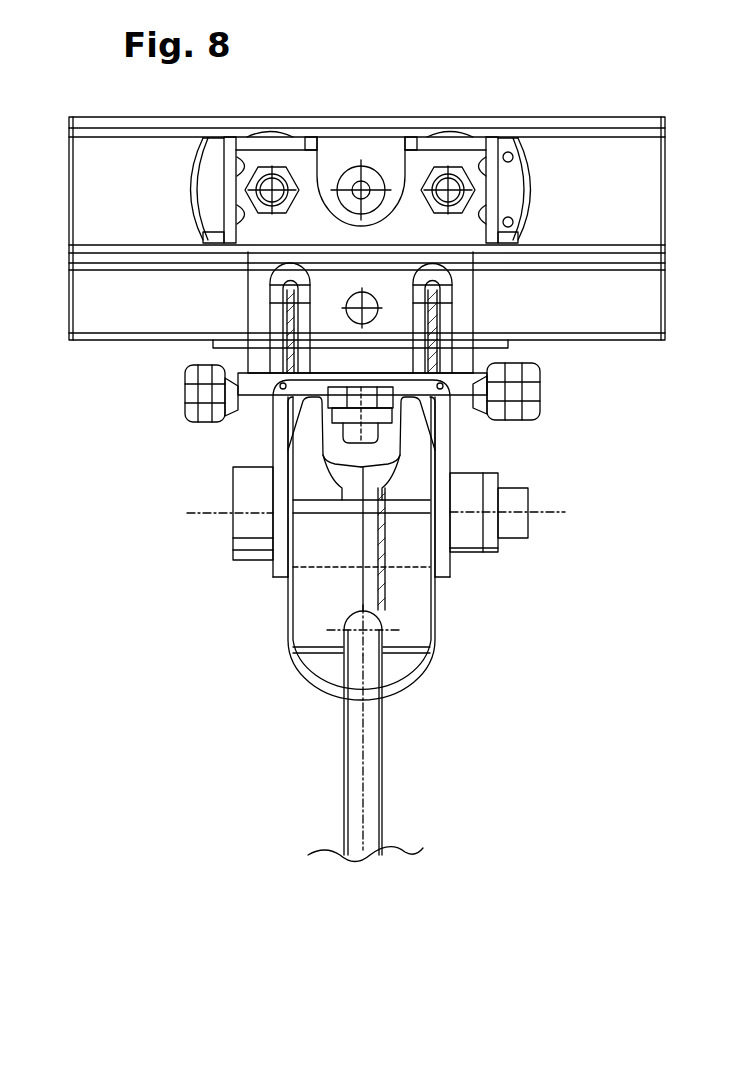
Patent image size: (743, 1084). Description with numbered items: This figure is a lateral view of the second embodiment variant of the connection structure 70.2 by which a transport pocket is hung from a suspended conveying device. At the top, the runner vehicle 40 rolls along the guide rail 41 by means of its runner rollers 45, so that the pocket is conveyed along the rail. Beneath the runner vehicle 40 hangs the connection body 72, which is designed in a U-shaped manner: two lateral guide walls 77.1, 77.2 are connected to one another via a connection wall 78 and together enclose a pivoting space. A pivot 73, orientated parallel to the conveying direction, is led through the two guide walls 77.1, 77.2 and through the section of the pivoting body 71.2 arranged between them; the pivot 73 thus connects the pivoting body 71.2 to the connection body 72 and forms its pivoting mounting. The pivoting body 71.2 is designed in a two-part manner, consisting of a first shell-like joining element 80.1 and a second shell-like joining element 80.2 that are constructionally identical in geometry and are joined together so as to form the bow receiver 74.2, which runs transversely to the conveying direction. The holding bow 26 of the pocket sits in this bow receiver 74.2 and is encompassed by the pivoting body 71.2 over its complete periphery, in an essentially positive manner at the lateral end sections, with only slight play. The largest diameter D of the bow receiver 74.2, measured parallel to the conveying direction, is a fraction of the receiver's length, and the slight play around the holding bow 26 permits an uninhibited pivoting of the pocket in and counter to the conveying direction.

The holding bow 26 is at (357, 783).
The runner vehicle 40 is at (243, 300).
The guide rail 41 is at (602, 305).
The runner rollers 45 is at (283, 127).
The connection structure 70.2 is at (420, 680).
The pivoting body 71.2 is at (311, 606).
The connection body 72 is at (282, 432).
The pivot 73 is at (255, 513).
The bow receiver 74.2 is at (373, 630).
The first lateral guide wall 77.1 is at (282, 537).
The second lateral guide wall 77.2 is at (447, 450).
The connection wall 78 is at (377, 378).
The first shell-like joining element 80.1 is at (320, 638).
The second shell-like joining element 80.2 is at (410, 598).
The largest diameter of the bow receiver D is at (332, 694).